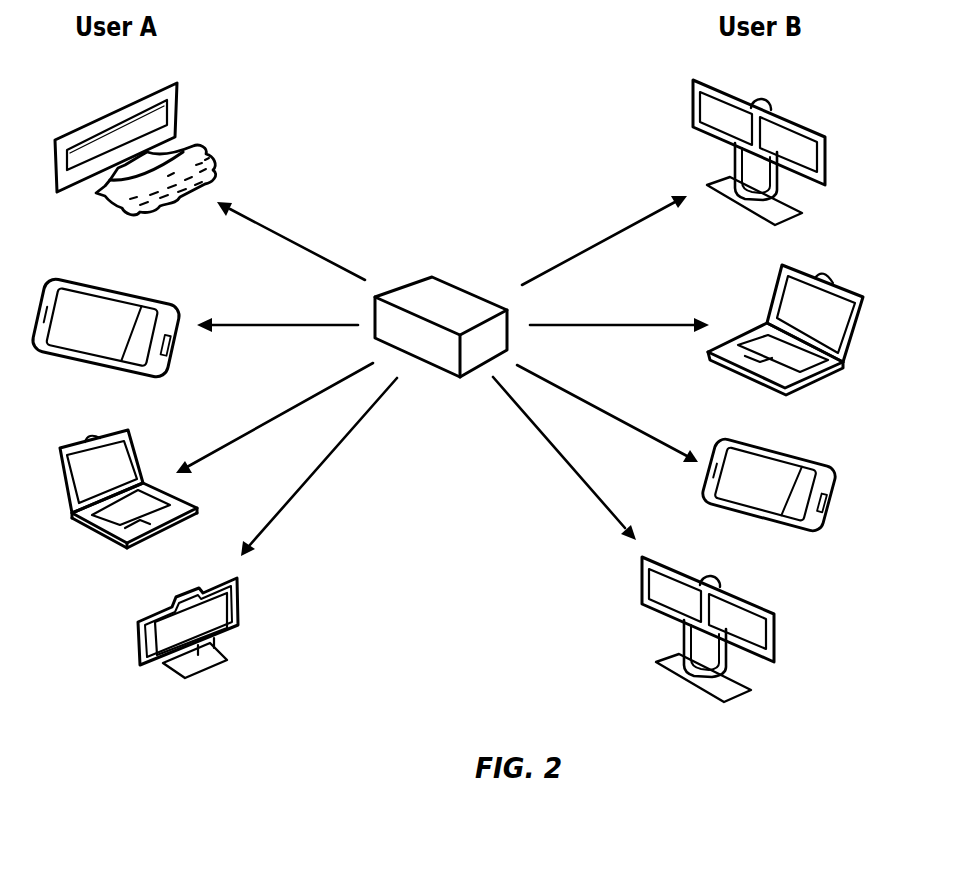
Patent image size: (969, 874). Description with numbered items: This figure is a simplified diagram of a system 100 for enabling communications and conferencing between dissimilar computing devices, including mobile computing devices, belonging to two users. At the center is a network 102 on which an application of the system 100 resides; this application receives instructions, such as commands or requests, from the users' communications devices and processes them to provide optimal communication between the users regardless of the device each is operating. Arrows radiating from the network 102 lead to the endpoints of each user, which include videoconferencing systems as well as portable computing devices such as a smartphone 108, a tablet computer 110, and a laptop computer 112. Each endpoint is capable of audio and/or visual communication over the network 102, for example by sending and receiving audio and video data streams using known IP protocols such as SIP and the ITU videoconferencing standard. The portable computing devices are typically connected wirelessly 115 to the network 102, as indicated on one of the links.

The system 100 is at (300, 707).
The network 102 is at (461, 267).
The smartphone 108 is at (782, 449).
The tablet computer 110 is at (100, 283).
The laptop computer 112 is at (800, 267).
The wireless connection 115 is at (547, 440).